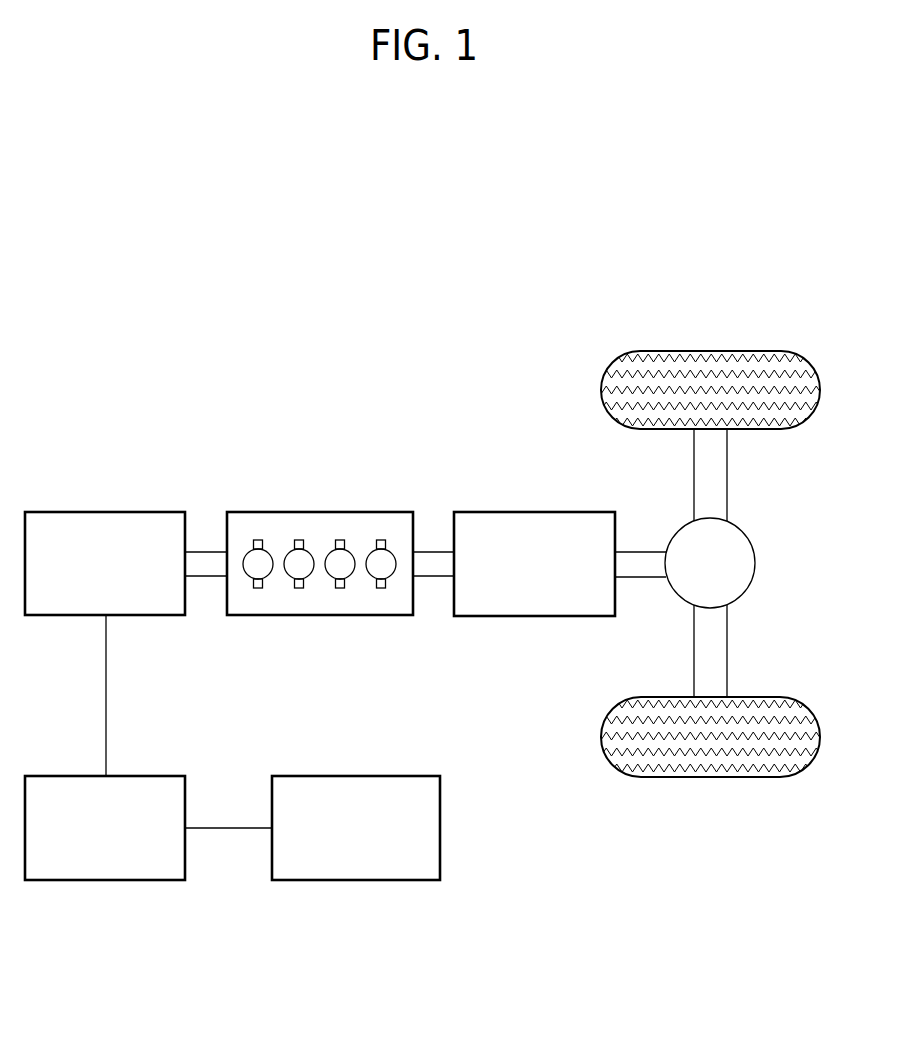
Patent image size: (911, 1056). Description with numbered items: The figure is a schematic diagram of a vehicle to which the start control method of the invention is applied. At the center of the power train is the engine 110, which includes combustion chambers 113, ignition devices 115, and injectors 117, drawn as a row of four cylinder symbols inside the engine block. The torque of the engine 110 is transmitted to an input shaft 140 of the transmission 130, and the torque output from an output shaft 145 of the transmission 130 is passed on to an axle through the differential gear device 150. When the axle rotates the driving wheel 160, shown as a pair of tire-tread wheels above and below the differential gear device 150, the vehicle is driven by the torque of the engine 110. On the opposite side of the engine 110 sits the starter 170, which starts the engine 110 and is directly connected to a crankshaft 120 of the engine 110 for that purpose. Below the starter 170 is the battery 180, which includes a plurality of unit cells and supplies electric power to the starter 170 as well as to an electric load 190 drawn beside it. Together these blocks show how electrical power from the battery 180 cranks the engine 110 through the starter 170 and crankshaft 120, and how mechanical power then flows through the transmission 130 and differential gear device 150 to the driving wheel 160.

The engine 110 is at (320, 562).
The combustion chambers 113 is at (268, 574).
The ignition devices 115 is at (255, 540).
The injectors 117 is at (255, 588).
The crankshaft 120 is at (205, 577).
The transmission 130 is at (534, 617).
The input shaft 140 is at (433, 577).
The output shaft 145 is at (647, 551).
The differential gear device 150 is at (755, 563).
The driving wheel 160 is at (709, 350).
The starter 170 is at (106, 511).
The battery 180 is at (106, 881).
The electric load 190 is at (356, 881).